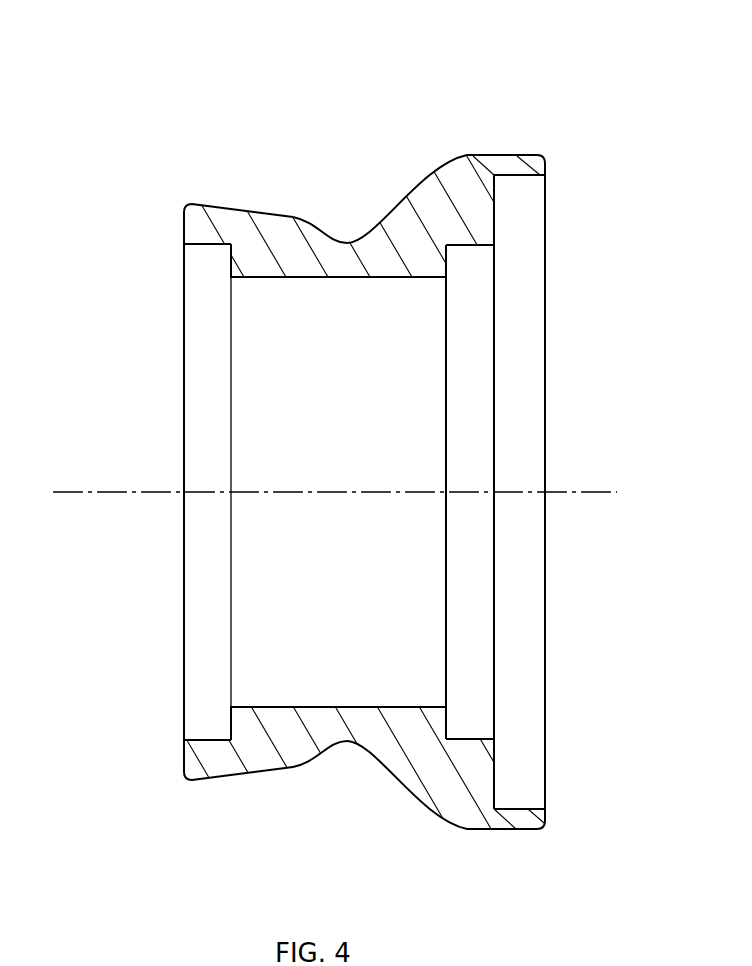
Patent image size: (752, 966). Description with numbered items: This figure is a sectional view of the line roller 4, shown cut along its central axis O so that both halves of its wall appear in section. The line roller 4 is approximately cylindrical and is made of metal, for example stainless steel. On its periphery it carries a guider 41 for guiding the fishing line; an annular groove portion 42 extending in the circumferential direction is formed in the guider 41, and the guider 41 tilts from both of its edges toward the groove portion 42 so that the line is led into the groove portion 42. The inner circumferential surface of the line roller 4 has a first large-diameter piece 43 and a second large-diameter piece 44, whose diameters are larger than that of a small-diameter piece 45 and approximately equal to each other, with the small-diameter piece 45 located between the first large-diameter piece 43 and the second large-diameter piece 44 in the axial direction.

The line roller 4 is at (552, 124).
The guider 41 is at (458, 157).
The annular groove portion 42 is at (344, 242).
The first large-diameter piece 43 is at (214, 246).
The second large-diameter piece 44 is at (467, 247).
The small-diameter piece 45 is at (298, 281).
The central axis O is at (85, 493).